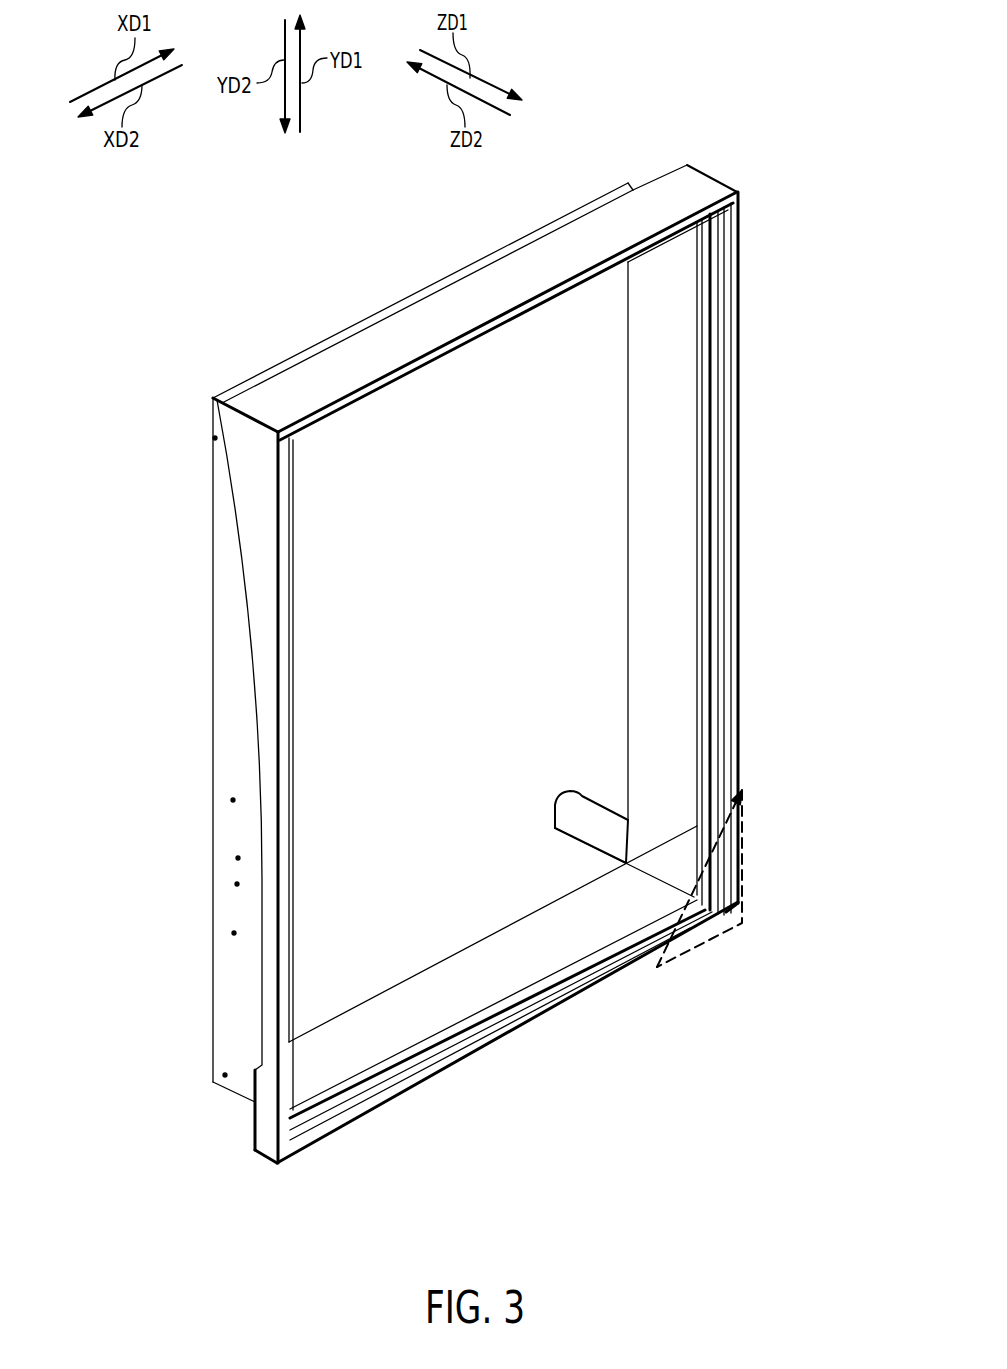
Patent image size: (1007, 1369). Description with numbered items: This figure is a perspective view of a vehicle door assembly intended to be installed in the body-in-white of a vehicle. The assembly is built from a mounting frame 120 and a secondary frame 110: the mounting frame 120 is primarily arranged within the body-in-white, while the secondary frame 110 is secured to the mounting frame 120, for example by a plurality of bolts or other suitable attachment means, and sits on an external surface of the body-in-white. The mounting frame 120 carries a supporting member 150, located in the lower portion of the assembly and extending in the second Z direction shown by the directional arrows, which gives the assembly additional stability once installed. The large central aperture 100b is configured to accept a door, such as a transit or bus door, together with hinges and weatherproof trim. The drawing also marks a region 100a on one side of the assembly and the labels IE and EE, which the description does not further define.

The secondary frame 110 is at (700, 174).
The mounting frame 120 is at (212, 750).
The supporting member 150 is at (587, 810).
The first side region of frame 100a is at (707, 942).
The aperture 100b is at (493, 896).
The interior side IE is at (268, 275).
The exterior side EE is at (552, 1140).